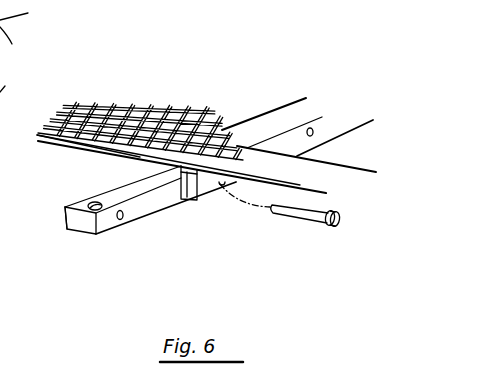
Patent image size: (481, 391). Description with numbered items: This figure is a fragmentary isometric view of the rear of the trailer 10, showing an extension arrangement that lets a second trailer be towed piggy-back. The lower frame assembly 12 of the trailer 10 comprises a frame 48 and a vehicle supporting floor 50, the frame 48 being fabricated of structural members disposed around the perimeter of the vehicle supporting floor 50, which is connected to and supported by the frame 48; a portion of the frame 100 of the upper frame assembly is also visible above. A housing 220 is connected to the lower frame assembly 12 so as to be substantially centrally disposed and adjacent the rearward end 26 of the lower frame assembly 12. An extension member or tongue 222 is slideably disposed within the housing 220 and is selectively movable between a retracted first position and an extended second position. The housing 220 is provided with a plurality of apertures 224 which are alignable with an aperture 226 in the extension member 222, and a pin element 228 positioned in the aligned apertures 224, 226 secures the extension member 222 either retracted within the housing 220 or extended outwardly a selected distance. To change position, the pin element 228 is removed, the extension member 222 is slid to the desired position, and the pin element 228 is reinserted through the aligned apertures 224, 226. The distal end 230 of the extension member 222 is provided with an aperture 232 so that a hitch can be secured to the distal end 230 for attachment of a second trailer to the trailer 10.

The trailer 10 is at (251, 57).
The lower frame assembly 12 is at (352, 155).
The rearward end 26 is at (82, 150).
The frame 48 is at (300, 215).
The vehicle supporting floor 50 is at (152, 112).
The frame 100 is at (24, 52).
The housing 220 is at (204, 202).
The extension member 222 is at (146, 213).
The apertures 224 is at (311, 130).
The aperture 226 is at (121, 226).
The pin element 228 is at (340, 230).
The distal end 230 is at (82, 205).
The aperture 232 is at (72, 230).